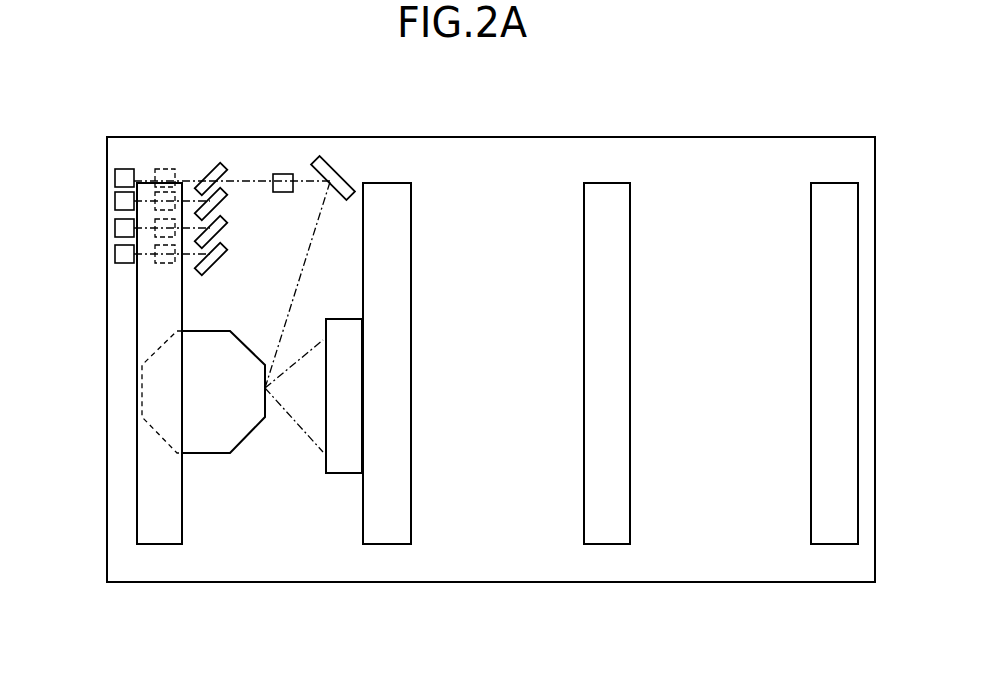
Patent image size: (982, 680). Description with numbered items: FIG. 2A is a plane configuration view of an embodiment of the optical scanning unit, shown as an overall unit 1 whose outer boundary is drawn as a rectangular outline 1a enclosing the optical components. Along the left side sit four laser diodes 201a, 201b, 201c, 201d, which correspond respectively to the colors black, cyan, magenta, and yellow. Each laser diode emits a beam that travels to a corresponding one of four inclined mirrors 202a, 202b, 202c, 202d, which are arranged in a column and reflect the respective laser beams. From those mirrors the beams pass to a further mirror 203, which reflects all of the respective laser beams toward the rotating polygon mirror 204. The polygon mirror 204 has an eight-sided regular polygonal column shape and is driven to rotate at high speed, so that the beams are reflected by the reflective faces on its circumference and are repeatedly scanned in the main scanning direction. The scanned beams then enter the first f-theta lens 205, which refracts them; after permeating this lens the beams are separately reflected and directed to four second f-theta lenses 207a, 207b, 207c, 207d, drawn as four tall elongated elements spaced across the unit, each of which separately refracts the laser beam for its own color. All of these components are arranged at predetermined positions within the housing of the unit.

The optical scanning device 1 is at (792, 111).
The housing 1a is at (690, 137).
The laser diode 201a is at (114, 182).
The laser diode 201b is at (114, 204).
The laser diode 201c is at (114, 230).
The laser diode 201d is at (114, 256).
The mirror 202a is at (203, 170).
The mirror 202b is at (222, 200).
The mirror 202c is at (222, 228).
The mirror 202d is at (212, 272).
The mirror 203 is at (338, 175).
The rotating polygon mirror 204 is at (283, 173).
The first f-theta lens 205 is at (341, 463).
The second f-theta lens 207a is at (832, 540).
The second f-theta lens 207b is at (607, 540).
The second f-theta lens 207c is at (388, 540).
The second f-theta lens 207d is at (160, 540).